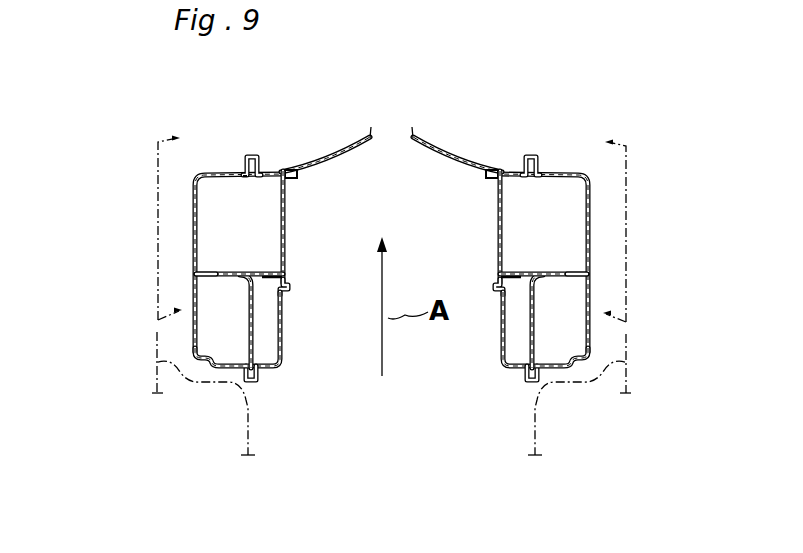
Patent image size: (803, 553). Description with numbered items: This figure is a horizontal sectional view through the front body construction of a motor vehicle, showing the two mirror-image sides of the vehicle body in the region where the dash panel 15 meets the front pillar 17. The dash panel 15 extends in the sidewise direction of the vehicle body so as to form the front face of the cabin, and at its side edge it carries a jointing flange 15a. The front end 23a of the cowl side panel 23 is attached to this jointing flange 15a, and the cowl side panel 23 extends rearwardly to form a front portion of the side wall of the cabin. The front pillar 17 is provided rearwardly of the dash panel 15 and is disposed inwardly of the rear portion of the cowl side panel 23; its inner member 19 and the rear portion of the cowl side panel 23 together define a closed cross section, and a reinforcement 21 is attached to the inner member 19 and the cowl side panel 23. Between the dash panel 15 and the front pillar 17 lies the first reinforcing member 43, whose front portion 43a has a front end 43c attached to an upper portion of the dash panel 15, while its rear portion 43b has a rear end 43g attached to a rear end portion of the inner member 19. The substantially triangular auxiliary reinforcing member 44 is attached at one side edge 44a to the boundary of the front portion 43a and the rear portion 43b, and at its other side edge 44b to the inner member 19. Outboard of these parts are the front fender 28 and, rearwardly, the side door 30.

The dash panel 15 is at (336, 147).
The jointing flange 15a is at (258, 170).
The front pillar 17 is at (193, 370).
The inner member 19 is at (254, 337).
The reinforcement 21 is at (200, 307).
The cowl side panel 23 is at (186, 232).
The front end 23a is at (247, 170).
The front fender 28 is at (157, 180).
The side door 30 is at (157, 367).
The first reinforcing member 43 is at (293, 285).
The front portion 43a is at (289, 225).
The rear portion 43b is at (286, 311).
The front end 43c is at (297, 175).
The rear end 43g is at (258, 380).
The auxiliary reinforcing member 44 is at (249, 262).
The side edge 44a is at (268, 268).
The other side edge 44b is at (205, 270).